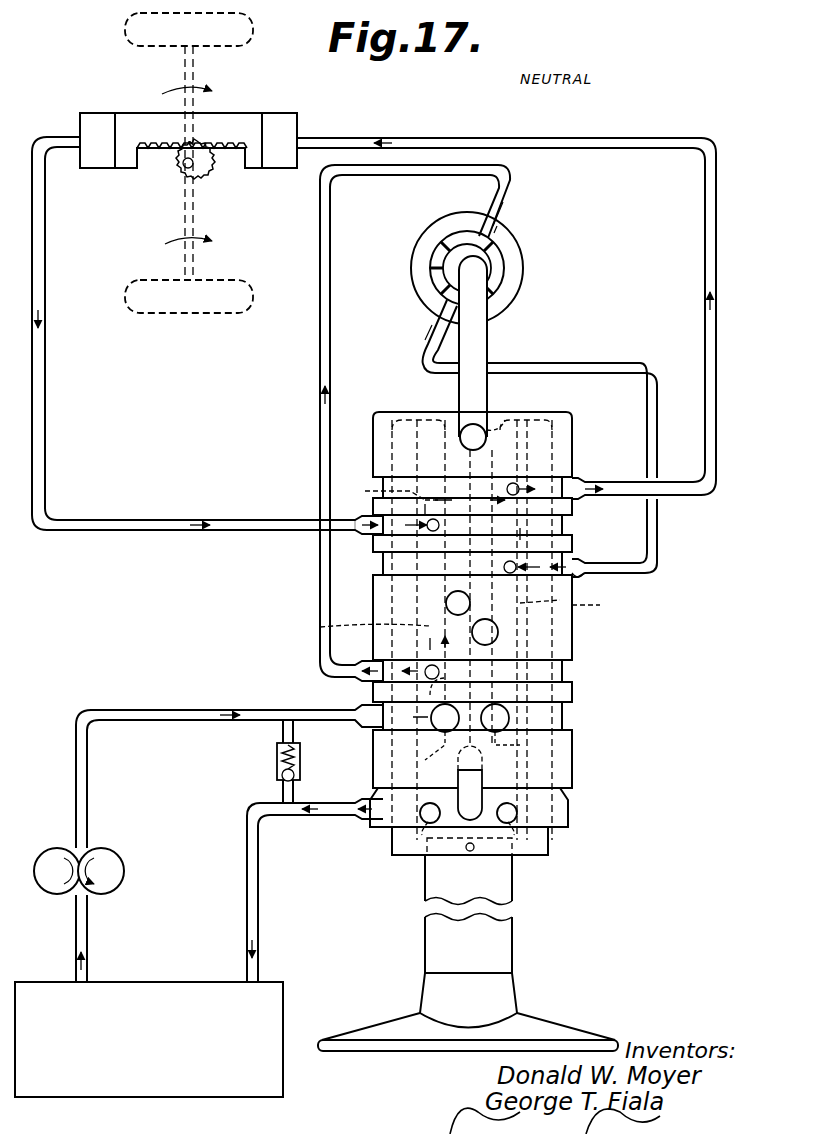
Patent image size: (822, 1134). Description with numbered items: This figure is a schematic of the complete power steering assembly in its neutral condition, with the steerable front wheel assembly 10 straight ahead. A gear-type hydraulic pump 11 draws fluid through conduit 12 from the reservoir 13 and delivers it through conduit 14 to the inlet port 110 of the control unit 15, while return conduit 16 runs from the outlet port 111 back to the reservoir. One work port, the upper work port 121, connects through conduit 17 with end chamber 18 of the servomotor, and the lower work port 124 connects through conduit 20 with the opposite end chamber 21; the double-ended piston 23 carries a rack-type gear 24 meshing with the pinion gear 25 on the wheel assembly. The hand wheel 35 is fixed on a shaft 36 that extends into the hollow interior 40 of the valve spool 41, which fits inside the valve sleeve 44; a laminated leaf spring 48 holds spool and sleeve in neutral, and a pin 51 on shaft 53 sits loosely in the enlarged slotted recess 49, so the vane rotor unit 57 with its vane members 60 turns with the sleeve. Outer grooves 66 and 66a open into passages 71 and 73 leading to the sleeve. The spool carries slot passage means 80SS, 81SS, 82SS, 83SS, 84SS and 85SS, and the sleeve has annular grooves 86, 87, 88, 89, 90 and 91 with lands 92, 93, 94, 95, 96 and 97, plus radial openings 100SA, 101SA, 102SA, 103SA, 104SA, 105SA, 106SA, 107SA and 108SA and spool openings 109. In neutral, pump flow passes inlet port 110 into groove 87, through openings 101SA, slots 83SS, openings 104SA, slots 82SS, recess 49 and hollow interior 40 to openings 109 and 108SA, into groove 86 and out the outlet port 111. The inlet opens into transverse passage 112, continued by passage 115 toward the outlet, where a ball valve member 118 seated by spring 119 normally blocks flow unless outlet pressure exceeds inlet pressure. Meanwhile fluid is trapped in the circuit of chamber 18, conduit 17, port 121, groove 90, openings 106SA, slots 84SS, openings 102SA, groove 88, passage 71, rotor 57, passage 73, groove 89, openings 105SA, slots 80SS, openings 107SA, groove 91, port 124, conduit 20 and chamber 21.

The steerable front wheel assembly 10 is at (210, 66).
The hydraulic pump 11 is at (106, 856).
The conduit 12 is at (88, 942).
The hydraulic fluid reservoir 13 is at (134, 985).
The conduit 14 is at (87, 802).
The control unit 15 is at (459, 632).
The return conduit 16 is at (246, 878).
The conduit 17 is at (238, 518).
The end chamber 18 is at (106, 149).
The conduit 20 is at (704, 290).
The opposite end chamber 21 is at (290, 146).
The double-ended piston 23 is at (236, 124).
The rack-type gear 24 is at (226, 152).
The pinion gear 25 is at (177, 173).
The hand wheel 35 is at (398, 1028).
The shaft 36 is at (425, 880).
The hollow interior 40 is at (462, 469).
The valve spool member 41 is at (552, 848).
The valve sleeve member 44 is at (578, 774).
The laminated leaf spring 48 is at (482, 774).
The enlarged slotted recess 49 is at (505, 410).
The pin 51 is at (480, 428).
The shaft 53 is at (480, 342).
The vane rotor unit 57 is at (490, 268).
The vane member 60 is at (440, 250).
The groove 66 is at (500, 222).
The groove 66a is at (432, 326).
The passage 71 is at (318, 380).
The passage 73 is at (590, 364).
The first passage means 80SS is at (572, 606).
The second passage means 81SS is at (515, 744).
The third passage means 82SS is at (457, 690).
The fourth passage means 83SS is at (421, 754).
The fifth passage means 84SS is at (346, 629).
The sixth passage means 85SS is at (386, 492).
The annular groove 86 is at (570, 804).
The annular groove 87 is at (566, 726).
The annular groove 88 is at (566, 672).
The annular groove 89 is at (580, 576).
The annular groove 90 is at (567, 530).
The annular groove 91 is at (570, 484).
The land 92 is at (574, 752).
The land 93 is at (574, 689).
The land 94 is at (574, 621).
The land 95 is at (574, 544).
The land 96 is at (574, 508).
The land 97 is at (574, 441).
The first radial openings passage means 100SA is at (509, 720).
The second passage means 101SA is at (438, 727).
The third radial passage means 102SA is at (425, 676).
The fourth passage means 103SA is at (498, 636).
The fifth passage means 104SA is at (446, 604).
The sixth fluid passage means 105SA is at (504, 567).
The seventh passage means 106SA is at (440, 525).
The eighth passage means 107SA is at (512, 482).
The ninth passage means 108SA is at (516, 816).
The radial passage means 109 is at (512, 830).
The inlet port 110 is at (356, 725).
The outlet port 111 is at (358, 822).
The passage 112 is at (283, 733).
The passage 115 is at (283, 795).
The ball valve member 118 is at (294, 779).
The spring 119 is at (277, 760).
The upper work port 121 is at (364, 534).
The lower work port 124 is at (590, 478).